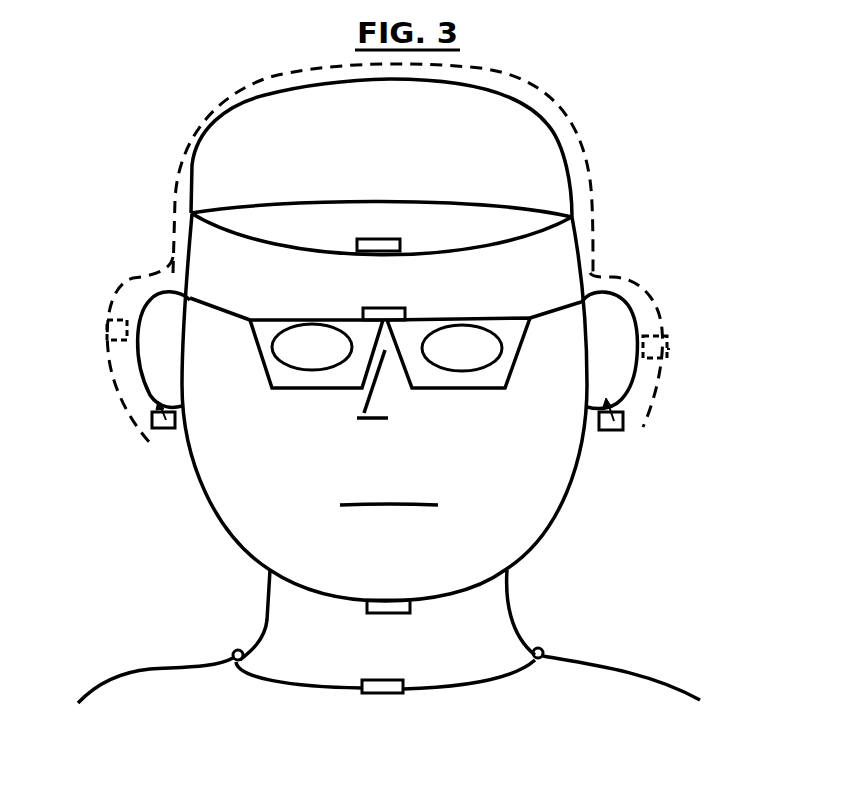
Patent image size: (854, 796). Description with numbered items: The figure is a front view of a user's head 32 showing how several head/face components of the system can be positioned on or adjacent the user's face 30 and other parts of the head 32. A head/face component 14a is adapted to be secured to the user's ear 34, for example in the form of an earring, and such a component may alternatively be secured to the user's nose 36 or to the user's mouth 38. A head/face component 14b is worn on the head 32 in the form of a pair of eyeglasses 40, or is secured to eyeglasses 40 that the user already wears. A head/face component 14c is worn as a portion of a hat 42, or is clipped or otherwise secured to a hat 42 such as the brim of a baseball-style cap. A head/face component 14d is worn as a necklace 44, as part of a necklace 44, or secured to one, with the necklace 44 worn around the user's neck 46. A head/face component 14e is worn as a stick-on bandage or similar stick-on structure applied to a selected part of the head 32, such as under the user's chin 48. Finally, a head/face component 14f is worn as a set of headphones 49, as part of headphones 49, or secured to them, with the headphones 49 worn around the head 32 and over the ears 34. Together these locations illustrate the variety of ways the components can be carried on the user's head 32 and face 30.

The head 32 is at (133, 142).
The hat 42 is at (537, 130).
The face 30 is at (538, 470).
The headphones 49 is at (146, 279).
The ear 34 is at (131, 343).
The head/face component 14a is at (165, 430).
The head/face component 14b is at (384, 309).
The head/face component 14c is at (375, 240).
The head/face component 14d is at (383, 688).
The head/face component 14e is at (393, 613).
The head/face component 14f is at (668, 349).
The nose 36 is at (370, 403).
The mouth 38 is at (343, 503).
The eyeglasses 40 is at (458, 389).
The necklace 44 is at (540, 652).
The neck 46 is at (266, 622).
The chin 48 is at (357, 599).